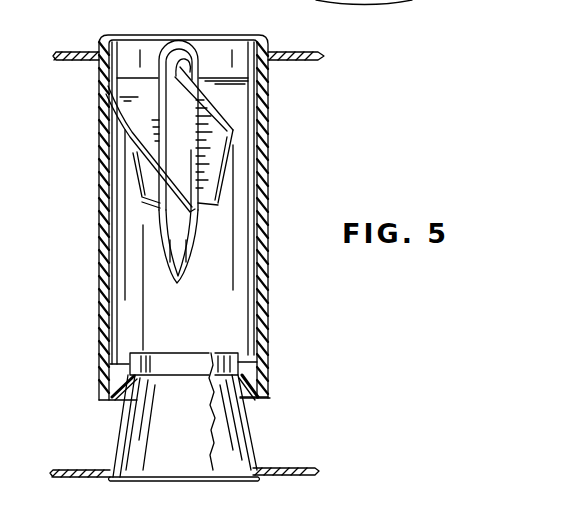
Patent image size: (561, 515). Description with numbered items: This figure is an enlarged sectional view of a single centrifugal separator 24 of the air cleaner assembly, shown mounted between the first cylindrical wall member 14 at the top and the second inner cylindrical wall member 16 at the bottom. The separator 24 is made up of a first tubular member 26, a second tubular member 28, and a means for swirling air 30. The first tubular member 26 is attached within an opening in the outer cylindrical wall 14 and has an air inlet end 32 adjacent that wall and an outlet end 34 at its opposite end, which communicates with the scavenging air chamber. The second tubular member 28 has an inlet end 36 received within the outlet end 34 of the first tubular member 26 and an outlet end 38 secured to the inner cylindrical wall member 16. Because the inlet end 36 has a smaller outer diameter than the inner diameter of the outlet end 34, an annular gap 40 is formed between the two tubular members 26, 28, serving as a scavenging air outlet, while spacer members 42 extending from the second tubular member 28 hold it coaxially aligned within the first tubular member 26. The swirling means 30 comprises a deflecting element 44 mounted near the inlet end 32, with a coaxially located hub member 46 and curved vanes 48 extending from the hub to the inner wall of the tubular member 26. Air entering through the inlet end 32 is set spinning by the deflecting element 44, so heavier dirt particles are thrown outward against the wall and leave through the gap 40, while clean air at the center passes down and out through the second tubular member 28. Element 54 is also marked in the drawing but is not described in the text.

The first cylindrical wall member 14 is at (323, 56).
The second inner cylindrical wall member 16 is at (318, 467).
The centrifugal separator 24 is at (278, 188).
The first tubular member 26 is at (100, 204).
The second tubular member 28 is at (118, 438).
The means for swirling air 30 is at (137, 157).
The air inlet end 32 is at (126, 37).
The outlet end 34 is at (268, 405).
The inlet end 36 is at (181, 353).
The outlet end 38 is at (140, 482).
The annular gap 40 is at (120, 364).
The spacer member 42 is at (107, 400).
The deflecting element 44 is at (158, 228).
The hub member 46 is at (188, 238).
The curved vanes 48 is at (137, 146).
The upper element 54 is at (350, 12).